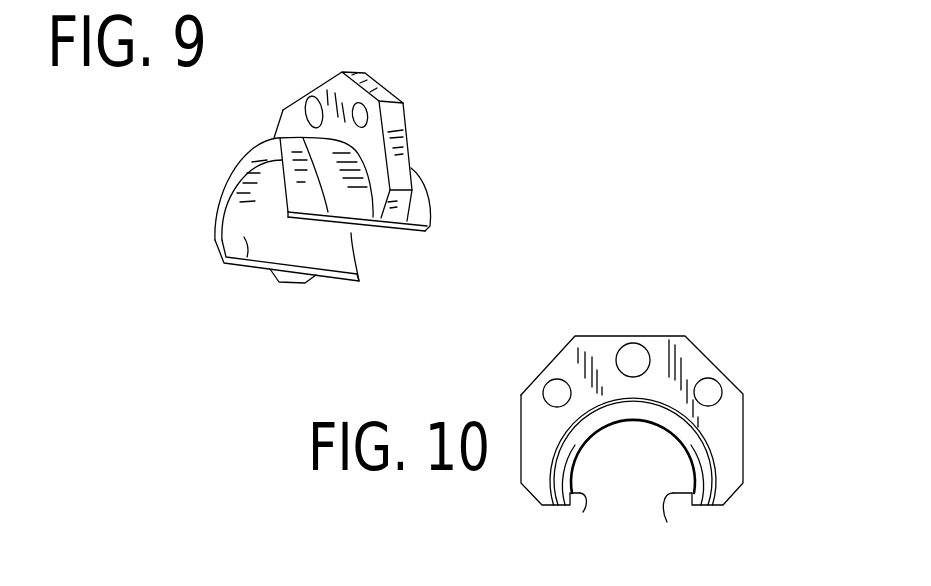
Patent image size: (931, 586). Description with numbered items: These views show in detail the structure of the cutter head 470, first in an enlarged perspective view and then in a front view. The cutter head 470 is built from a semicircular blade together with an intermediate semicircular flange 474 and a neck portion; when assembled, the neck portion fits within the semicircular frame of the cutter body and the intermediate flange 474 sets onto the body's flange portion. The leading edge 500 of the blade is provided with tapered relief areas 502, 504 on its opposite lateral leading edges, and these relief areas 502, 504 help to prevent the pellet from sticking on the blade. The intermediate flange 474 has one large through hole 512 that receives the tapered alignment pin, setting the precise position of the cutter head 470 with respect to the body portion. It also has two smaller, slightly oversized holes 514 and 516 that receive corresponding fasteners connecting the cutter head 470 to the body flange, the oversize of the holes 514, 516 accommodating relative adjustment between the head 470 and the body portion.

In FIG. 9, the cutter head 470 is at (430, 167).
In FIG. 10, the intermediate semicircular flange 474 is at (700, 347).
In FIG. 9, the leading edge 500 is at (252, 148).
In FIG. 9, the relief area 502 is at (230, 249).
In FIG. 10, the relief area 502 is at (583, 512).
In FIG. 10, the relief area 504 is at (667, 522).
In FIG. 9, the large through hole 512 is at (313, 113).
In FIG. 10, the large through hole 512 is at (650, 345).
In FIG. 10, the smaller hole 514 is at (550, 387).
In FIG. 10, the smaller hole 516 is at (713, 387).